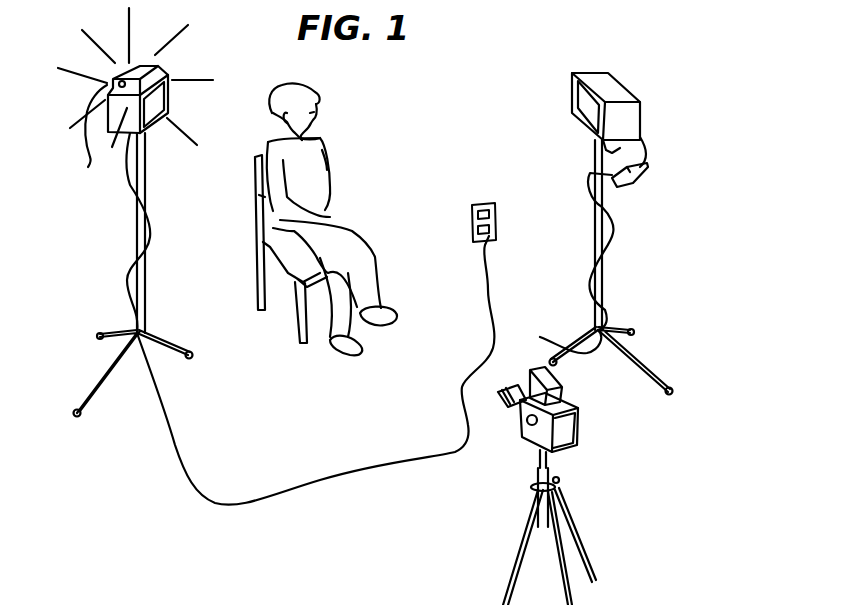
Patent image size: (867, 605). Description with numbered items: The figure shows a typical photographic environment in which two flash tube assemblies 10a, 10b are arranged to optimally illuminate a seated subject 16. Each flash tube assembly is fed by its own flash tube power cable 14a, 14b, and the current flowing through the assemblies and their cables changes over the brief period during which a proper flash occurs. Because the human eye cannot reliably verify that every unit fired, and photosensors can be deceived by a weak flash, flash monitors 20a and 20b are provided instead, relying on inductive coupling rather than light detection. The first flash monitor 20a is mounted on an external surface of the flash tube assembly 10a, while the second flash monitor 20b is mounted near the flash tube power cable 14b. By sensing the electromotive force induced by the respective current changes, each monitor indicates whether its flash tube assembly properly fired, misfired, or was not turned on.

The flash tube assembly 10a is at (172, 72).
The flash tube assembly 10b is at (633, 93).
The flash tube power cable 14a is at (198, 487).
The flash tube power cable 14b is at (623, 235).
The subject 16 is at (318, 173).
The flash monitor 20a is at (82, 144).
The flash monitor 20b is at (640, 187).